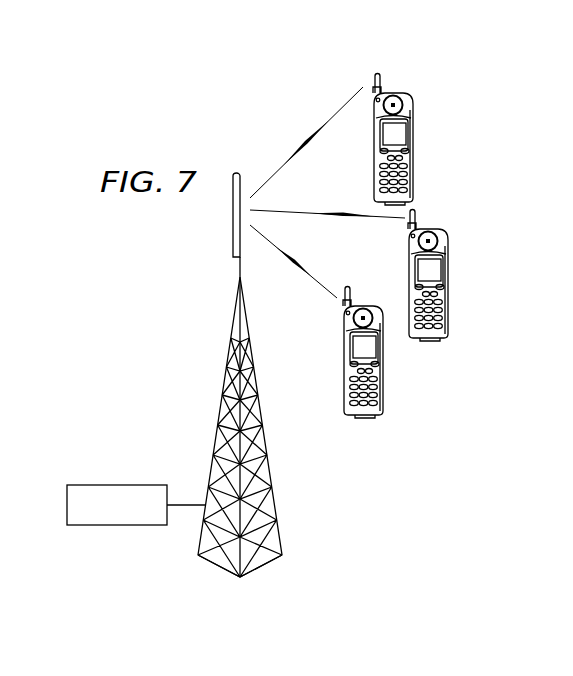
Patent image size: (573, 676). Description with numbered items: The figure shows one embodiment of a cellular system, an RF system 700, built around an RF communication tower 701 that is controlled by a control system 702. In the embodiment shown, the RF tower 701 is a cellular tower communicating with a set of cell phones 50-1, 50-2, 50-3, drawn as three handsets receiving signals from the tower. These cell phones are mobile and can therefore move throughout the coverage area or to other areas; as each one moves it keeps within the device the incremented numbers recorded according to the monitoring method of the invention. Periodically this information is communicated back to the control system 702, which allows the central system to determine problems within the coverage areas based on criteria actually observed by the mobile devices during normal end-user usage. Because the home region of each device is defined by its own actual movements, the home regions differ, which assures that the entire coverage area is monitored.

The RF system 700 is at (84, 299).
The RF communication tower 701 is at (232, 330).
The control system 702 is at (118, 525).
The cell phone 50-1 is at (414, 153).
The cell phone 50-2 is at (449, 289).
The cell phone 50-3 is at (384, 367).